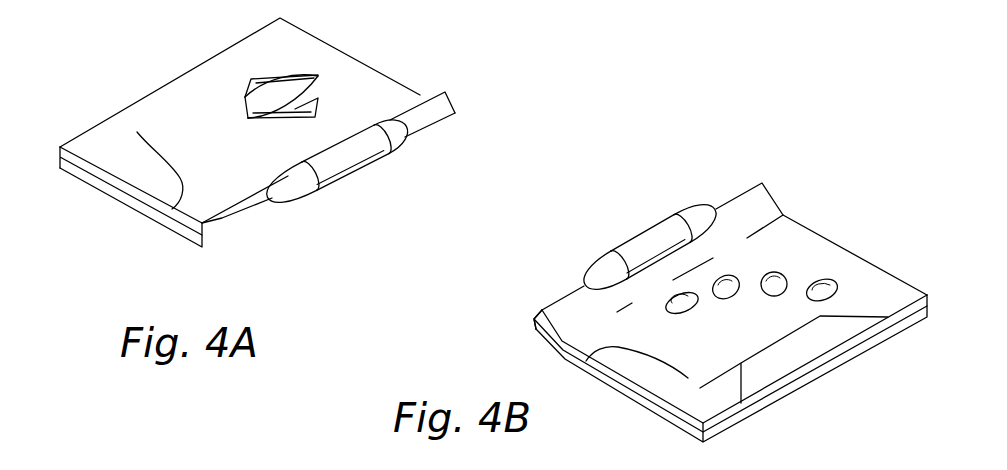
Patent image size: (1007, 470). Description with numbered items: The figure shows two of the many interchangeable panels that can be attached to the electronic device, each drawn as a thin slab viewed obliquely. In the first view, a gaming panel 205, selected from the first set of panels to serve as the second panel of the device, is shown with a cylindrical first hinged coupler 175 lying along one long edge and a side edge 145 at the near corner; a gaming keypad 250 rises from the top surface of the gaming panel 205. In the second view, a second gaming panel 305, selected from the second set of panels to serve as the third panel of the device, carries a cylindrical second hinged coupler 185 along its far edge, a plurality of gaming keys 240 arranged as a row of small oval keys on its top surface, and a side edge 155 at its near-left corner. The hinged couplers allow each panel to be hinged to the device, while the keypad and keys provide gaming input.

In FIG. 4A, the gaming panel 205 is at (137, 132).
In FIG. 4A, the gaming keypad 250 is at (247, 88).
In FIG. 4A, the first hinged coupler 175 is at (353, 144).
In FIG. 4A, the side edge 145 is at (222, 219).
In FIG. 4B, the second hinged coupler 185 is at (657, 240).
In FIG. 4B, the gaming keys 240 is at (681, 302).
In FIG. 4B, the side edge 155 is at (535, 319).
In FIG. 4B, the second gaming panel 305 is at (684, 357).